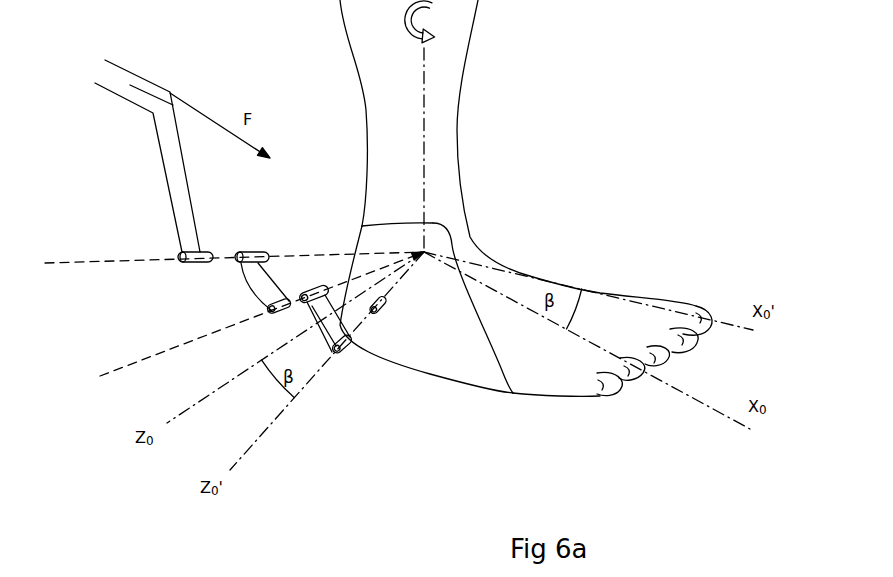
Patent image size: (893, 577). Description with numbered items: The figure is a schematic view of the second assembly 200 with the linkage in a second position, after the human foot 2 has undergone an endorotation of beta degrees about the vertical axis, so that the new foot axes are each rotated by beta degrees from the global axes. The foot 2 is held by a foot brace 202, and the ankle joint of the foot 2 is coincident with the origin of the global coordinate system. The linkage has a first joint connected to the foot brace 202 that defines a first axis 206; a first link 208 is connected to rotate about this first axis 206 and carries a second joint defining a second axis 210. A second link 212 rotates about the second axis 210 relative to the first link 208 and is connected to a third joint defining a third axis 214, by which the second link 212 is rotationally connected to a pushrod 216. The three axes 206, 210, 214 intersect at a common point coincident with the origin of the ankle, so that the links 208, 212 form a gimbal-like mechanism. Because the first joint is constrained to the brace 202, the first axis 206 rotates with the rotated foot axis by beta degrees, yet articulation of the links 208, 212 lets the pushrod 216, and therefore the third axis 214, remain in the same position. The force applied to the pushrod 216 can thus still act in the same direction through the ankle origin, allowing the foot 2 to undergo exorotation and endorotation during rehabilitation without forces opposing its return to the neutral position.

The human foot 2 is at (514, 347).
The second assembly 200 is at (527, 228).
The foot brace 202 is at (415, 332).
The first axis 206 is at (250, 448).
The first link 208 is at (353, 257).
The second axis 210 is at (189, 342).
The second link 212 is at (245, 252).
The third axis 214 is at (128, 262).
The pushrod 216 is at (175, 168).